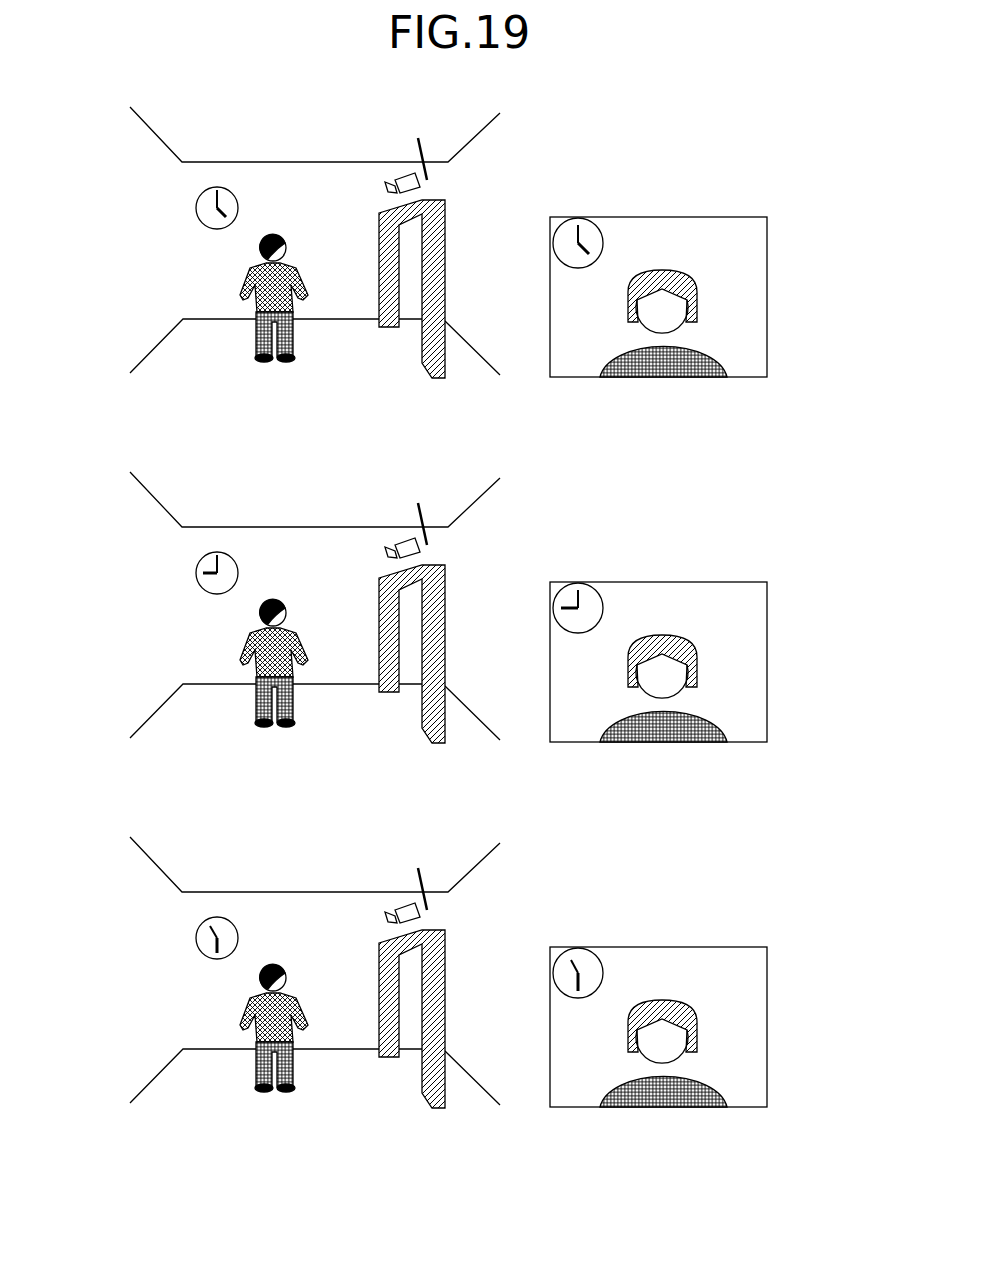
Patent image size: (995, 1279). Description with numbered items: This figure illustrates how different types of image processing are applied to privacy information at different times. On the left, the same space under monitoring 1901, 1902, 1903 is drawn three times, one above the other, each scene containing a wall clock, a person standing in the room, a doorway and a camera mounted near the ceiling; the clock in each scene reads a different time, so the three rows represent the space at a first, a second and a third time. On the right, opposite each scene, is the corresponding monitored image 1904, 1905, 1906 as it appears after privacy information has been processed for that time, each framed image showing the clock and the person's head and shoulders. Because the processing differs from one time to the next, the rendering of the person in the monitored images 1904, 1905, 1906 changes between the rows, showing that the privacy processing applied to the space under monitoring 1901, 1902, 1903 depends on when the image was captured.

The space under monitoring 1901 is at (203, 177).
The space under monitoring 1902 is at (203, 542).
The space under monitoring 1903 is at (203, 907).
The monitored image 1904 is at (730, 252).
The monitored image 1905 is at (730, 617).
The monitored image 1906 is at (730, 982).